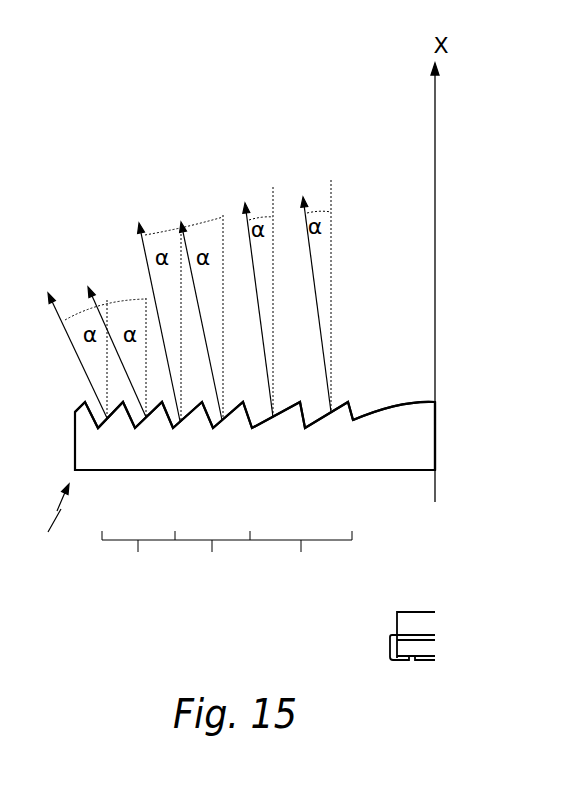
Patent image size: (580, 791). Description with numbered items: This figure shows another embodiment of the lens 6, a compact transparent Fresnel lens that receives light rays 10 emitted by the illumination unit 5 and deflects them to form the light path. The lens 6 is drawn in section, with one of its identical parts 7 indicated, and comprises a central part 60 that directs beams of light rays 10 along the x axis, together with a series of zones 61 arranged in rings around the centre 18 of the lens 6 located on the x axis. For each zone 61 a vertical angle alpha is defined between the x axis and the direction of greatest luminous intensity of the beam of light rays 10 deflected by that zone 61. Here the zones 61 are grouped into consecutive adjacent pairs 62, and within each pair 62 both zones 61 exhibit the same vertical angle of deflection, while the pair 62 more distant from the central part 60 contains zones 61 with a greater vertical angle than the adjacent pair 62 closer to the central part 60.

The illumination unit 5 is at (429, 604).
The lens 6 is at (317, 443).
The part 7 is at (54, 520).
The light rays 10 is at (55, 283).
The centre 18 is at (435, 402).
The central part 60 is at (388, 422).
The zone 61 is at (115, 425).
The pair 62 is at (227, 559).